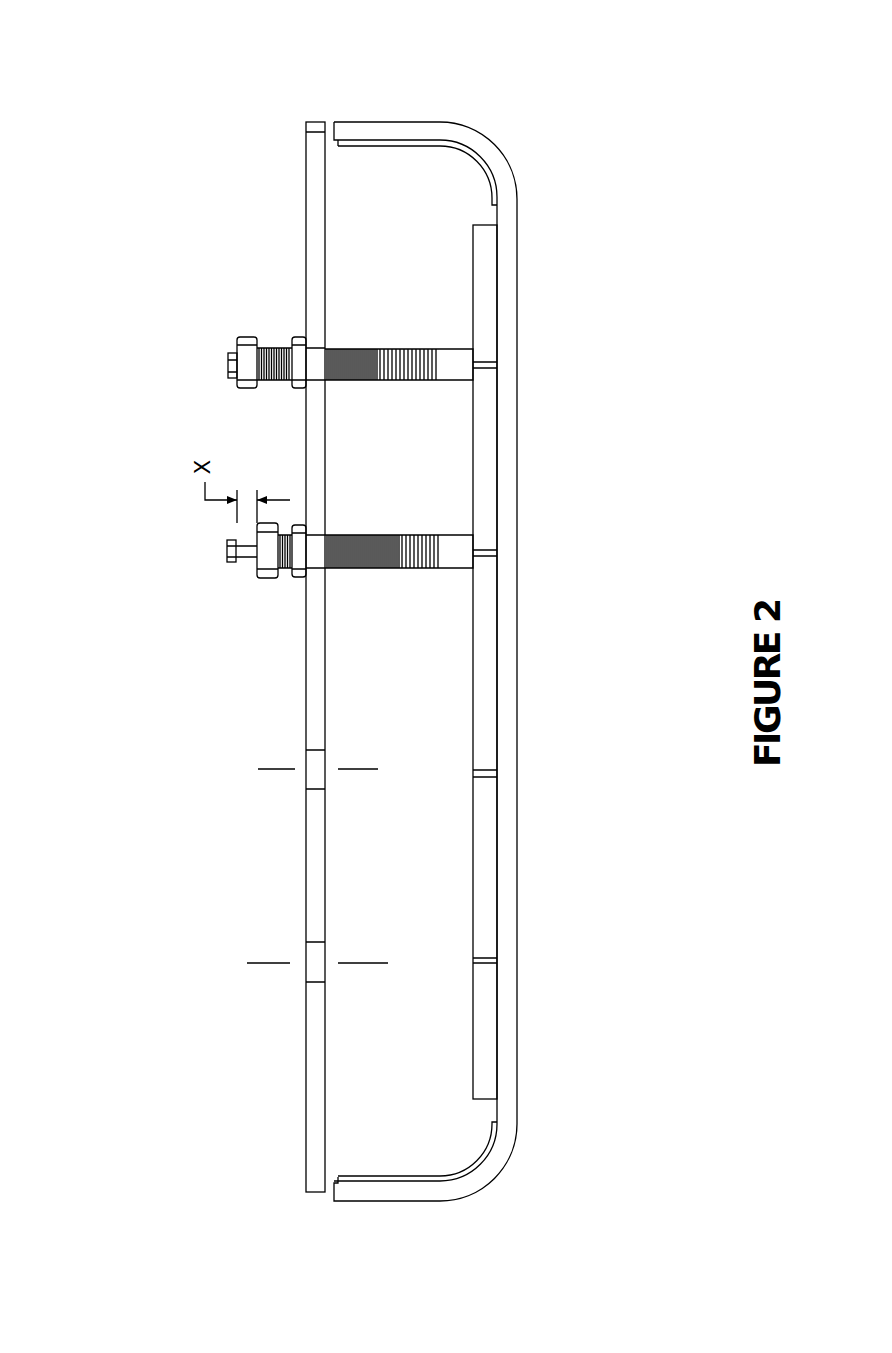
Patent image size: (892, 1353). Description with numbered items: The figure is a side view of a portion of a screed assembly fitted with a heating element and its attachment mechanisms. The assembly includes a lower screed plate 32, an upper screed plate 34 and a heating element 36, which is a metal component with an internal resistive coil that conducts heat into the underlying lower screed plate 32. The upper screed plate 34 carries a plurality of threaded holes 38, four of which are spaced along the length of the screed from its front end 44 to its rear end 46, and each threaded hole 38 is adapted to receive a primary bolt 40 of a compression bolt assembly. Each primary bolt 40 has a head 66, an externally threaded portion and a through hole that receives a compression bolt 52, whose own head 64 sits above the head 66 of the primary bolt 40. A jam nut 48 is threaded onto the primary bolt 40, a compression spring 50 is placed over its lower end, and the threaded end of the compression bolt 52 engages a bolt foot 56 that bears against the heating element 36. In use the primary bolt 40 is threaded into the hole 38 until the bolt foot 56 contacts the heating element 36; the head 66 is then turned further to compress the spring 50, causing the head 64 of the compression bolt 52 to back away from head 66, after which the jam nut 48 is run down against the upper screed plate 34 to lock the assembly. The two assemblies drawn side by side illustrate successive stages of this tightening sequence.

The lower screed plate 32 is at (519, 804).
The upper screed plate 34 is at (304, 283).
The heating element 36 is at (471, 296).
The threaded hole 38 is at (304, 762).
The primary bolt 40 is at (428, 503).
The front end 44 is at (477, 1226).
The rear end 46 is at (383, 96).
The jam nut 48 is at (297, 337).
The compression spring 50 is at (409, 346).
The compression bolt 52 is at (250, 567).
The bolt foot 56 is at (455, 350).
The head of compression bolt 64 is at (227, 352).
The head of primary bolt 66 is at (240, 337).